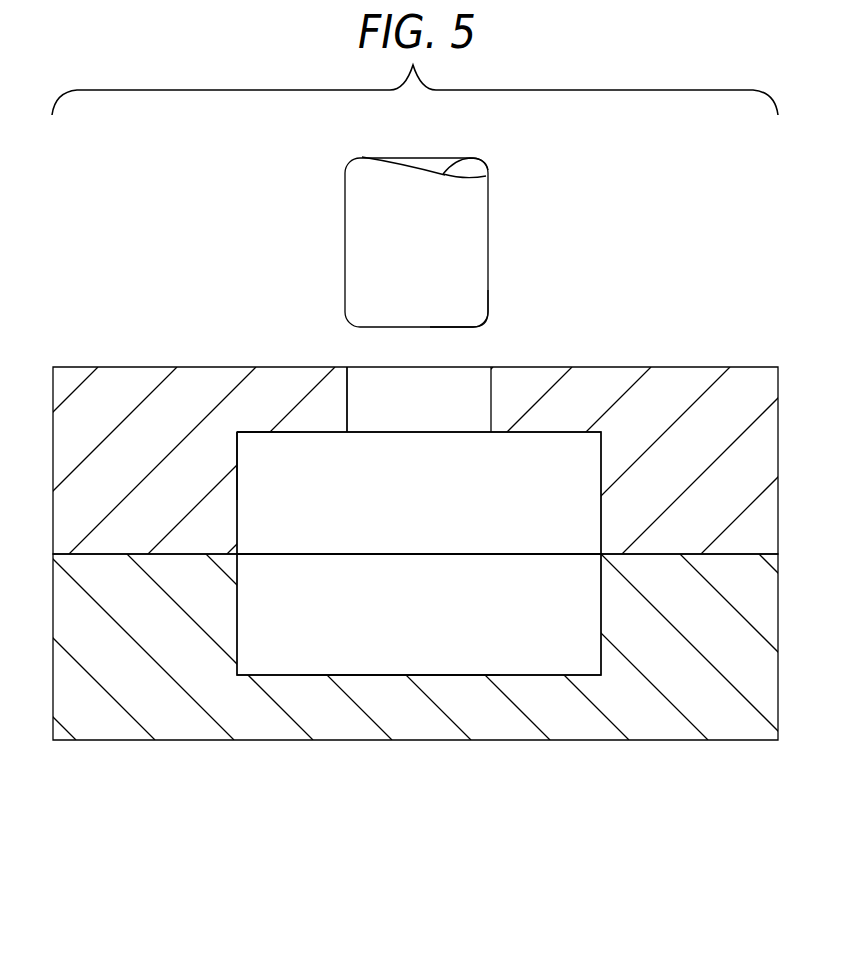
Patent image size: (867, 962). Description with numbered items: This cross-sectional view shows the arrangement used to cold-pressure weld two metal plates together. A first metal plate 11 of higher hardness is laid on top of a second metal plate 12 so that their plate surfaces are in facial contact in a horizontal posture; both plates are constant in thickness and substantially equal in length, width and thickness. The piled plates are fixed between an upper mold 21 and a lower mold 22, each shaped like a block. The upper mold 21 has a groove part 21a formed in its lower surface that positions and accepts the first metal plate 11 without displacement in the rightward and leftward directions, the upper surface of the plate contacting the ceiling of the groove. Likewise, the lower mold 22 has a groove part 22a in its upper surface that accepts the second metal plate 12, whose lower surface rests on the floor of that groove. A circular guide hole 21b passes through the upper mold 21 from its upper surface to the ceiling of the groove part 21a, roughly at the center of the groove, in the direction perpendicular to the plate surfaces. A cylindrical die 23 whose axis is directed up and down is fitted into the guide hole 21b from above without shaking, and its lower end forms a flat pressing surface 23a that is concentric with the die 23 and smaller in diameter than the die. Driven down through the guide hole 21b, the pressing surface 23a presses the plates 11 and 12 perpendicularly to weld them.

The first metal plate 11 is at (573, 462).
The second metal plate 12 is at (558, 607).
The upper mold 21 is at (713, 377).
The groove part 21a is at (270, 433).
The guide hole 21b is at (339, 376).
The lower mold 22 is at (710, 740).
The groove part 22a is at (373, 675).
The die 23 is at (473, 203).
The pressing surface 23a is at (453, 327).